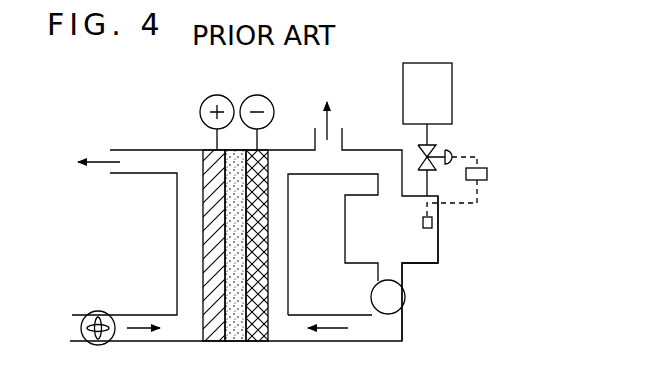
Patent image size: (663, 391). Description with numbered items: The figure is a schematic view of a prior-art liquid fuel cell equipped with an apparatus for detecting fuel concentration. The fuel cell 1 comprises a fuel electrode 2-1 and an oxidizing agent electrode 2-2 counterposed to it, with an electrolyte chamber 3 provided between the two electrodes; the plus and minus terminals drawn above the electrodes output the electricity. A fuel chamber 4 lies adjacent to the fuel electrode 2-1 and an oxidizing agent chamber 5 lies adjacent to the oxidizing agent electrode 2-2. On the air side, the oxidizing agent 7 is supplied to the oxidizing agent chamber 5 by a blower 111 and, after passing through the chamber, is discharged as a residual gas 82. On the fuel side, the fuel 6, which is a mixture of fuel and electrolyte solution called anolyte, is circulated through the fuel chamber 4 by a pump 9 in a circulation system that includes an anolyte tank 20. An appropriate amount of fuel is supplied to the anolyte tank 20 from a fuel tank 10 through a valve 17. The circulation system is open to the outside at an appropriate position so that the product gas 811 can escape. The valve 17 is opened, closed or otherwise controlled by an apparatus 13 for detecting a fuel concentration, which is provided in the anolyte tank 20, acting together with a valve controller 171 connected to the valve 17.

The fuel cell 1 is at (140, 150).
The oxidizing agent chamber 5 is at (177, 240).
The fuel chamber 4 is at (288, 240).
The oxidizing agent electrode 2-2 is at (212, 336).
The electrolyte chamber 3 is at (235, 341).
The fuel electrode 2-1 is at (258, 339).
The residual gas 82 is at (98, 160).
The product gas 811 is at (326, 120).
The oxidizing agent 7 is at (140, 328).
The fuel 6 is at (338, 341).
The blower 111 is at (98, 345).
The fuel tank 10 is at (452, 95).
The valve 17 is at (420, 150).
The valve controller 171 is at (487, 176).
The apparatus for detecting a fuel concentration 13 is at (432, 222).
The anolyte tank 20 is at (438, 255).
The pump 9 is at (405, 297).